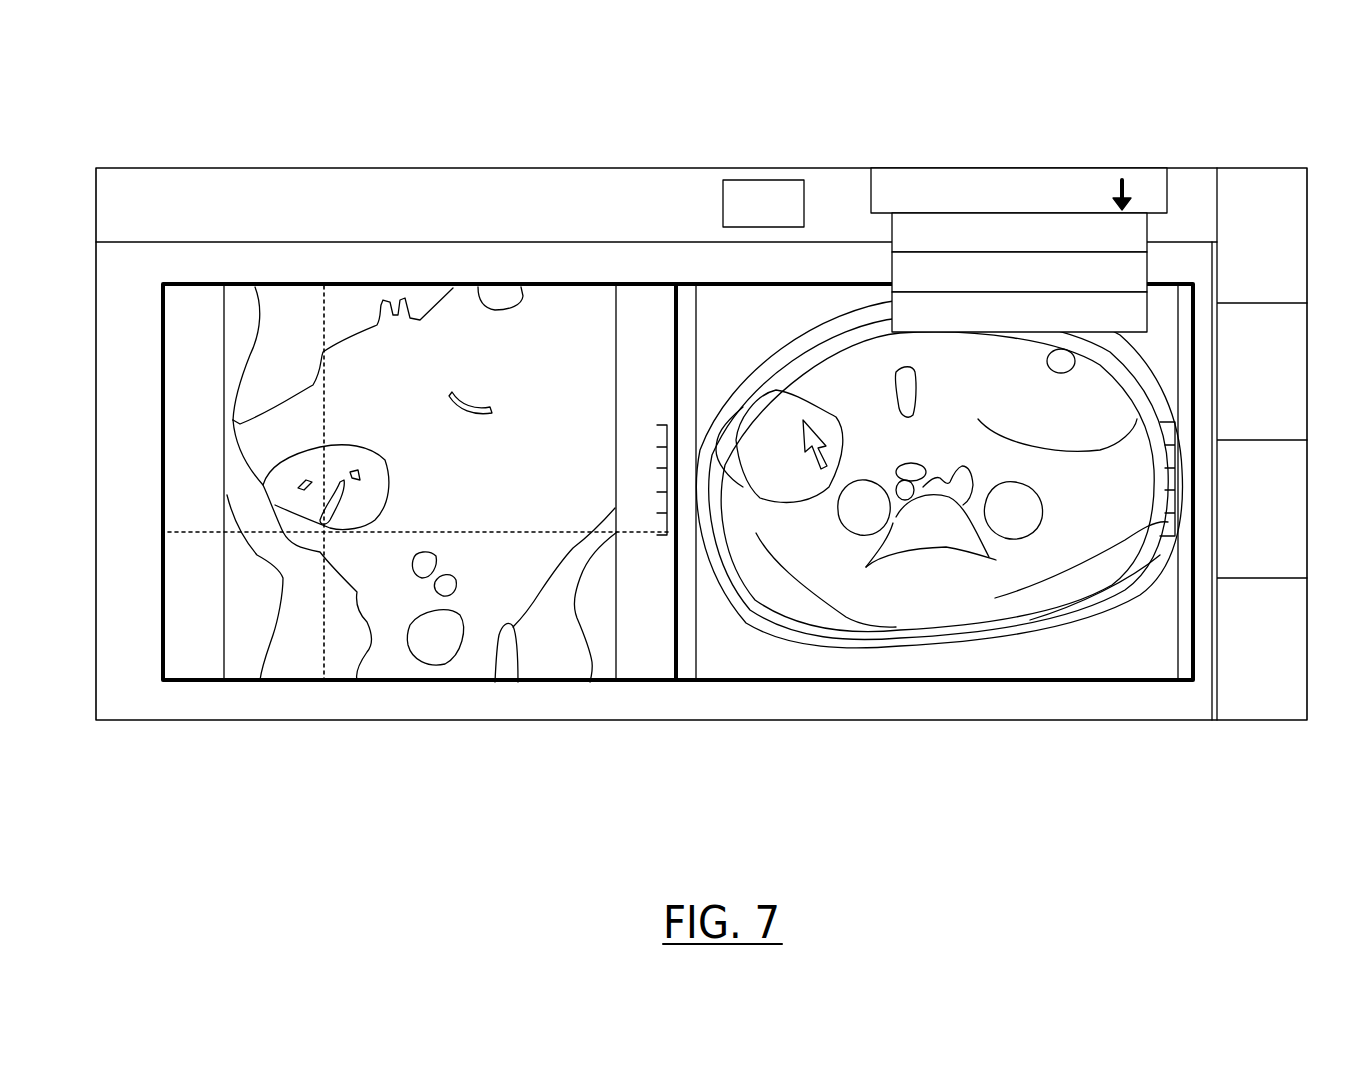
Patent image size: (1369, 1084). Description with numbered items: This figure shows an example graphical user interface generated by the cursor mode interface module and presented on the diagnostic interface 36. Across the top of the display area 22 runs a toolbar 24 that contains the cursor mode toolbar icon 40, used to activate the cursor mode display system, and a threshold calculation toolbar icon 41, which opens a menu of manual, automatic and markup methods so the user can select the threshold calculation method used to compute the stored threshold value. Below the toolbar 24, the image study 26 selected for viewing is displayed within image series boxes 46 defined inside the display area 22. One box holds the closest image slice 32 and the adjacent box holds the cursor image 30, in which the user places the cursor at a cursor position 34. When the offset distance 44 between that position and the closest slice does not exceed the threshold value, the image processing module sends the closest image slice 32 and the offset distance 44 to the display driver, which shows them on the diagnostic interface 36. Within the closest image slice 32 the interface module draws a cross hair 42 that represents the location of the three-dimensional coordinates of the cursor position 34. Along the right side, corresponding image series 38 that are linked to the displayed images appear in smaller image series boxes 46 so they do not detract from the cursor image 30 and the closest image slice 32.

The diagnostic interface 36 is at (680, 393).
The toolbar 24 is at (150, 208).
The cursor mode toolbar icon 40 is at (778, 180).
The threshold calculation toolbar icon 41 is at (1065, 167).
The display area 22 is at (317, 705).
The image series boxes 46 is at (789, 657).
The closest image slice 32 is at (447, 484).
The cursor image 30 is at (939, 473).
The cross hair 42 is at (327, 647).
The offset distance 44 is at (273, 580).
The cursor position 34 is at (833, 437).
The image study 26 is at (513, 720).
The corresponding image series 38 is at (1263, 507).